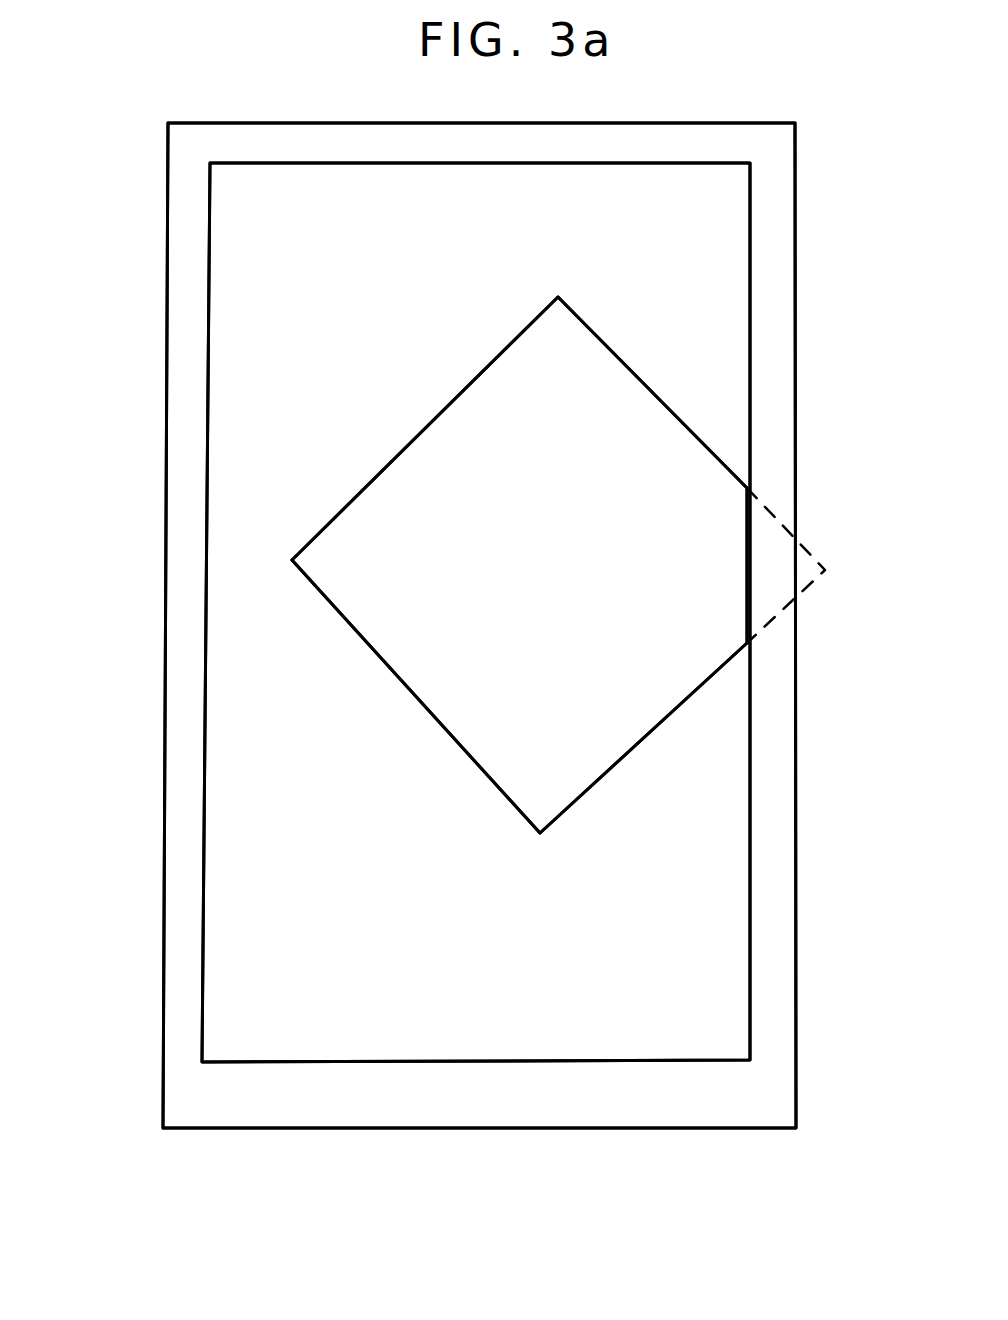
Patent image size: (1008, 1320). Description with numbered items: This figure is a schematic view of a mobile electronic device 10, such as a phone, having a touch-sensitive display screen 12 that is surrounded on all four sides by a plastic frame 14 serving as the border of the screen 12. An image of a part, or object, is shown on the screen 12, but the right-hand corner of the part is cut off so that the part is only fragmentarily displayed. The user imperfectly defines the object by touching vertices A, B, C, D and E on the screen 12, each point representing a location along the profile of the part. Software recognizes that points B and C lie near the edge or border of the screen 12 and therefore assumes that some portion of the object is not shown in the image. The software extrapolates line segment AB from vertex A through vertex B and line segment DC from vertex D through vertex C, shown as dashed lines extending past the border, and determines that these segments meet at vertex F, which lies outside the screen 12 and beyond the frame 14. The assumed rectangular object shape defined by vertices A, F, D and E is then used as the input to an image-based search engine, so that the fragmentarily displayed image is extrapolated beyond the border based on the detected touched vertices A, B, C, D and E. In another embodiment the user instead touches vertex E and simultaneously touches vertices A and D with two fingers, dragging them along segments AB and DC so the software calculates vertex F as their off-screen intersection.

The mobile electronic device 10 is at (120, 1187).
The touch-sensitive display screen 12 is at (476, 612).
The plastic frame 14 is at (106, 839).
The vertex A is at (558, 297).
The vertex B is at (746, 486).
The vertex C is at (745, 648).
The vertex D is at (538, 836).
The vertex E is at (291, 561).
The vertex F is at (825, 572).